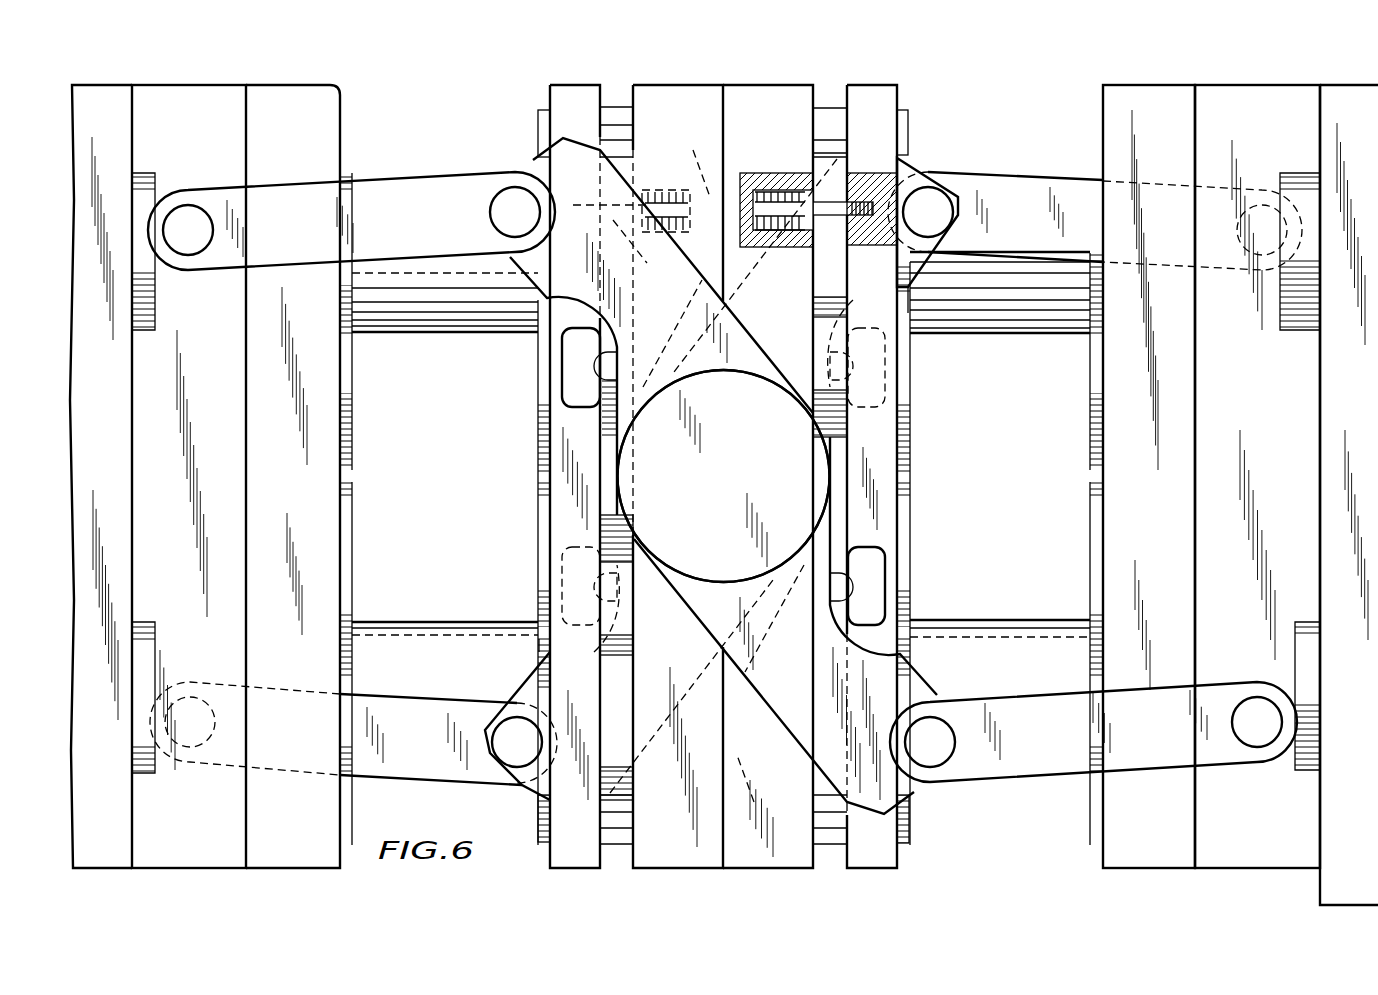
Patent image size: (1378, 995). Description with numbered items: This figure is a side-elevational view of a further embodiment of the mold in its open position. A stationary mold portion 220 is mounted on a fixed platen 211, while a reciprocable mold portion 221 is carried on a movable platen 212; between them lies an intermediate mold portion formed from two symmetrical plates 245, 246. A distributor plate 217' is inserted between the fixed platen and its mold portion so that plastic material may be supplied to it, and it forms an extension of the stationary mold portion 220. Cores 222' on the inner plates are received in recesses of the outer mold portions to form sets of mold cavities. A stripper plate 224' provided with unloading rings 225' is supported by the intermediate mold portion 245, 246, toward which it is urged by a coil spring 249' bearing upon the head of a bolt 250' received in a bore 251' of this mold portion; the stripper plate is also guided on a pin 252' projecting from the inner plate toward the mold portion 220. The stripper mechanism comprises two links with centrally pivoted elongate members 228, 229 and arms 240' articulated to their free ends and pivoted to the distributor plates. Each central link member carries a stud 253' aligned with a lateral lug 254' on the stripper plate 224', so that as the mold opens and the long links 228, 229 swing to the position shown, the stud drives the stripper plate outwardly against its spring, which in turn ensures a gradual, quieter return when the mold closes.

The movable platen 212 is at (108, 96).
The reciprocable mold portion 221 is at (290, 96).
The symmetrical plate of intermediate mold portion 246 is at (668, 92).
The symmetrical plate of intermediate mold portion 245 is at (768, 92).
The stripper plate 224' is at (876, 459).
The pin 252' is at (893, 459).
The stationary mold portion 220 is at (1162, 96).
The distributor plate 217' is at (1257, 462).
The fixed platen 211 is at (1348, 100).
The bore 251' is at (800, 167).
The coil spring 249' is at (818, 195).
The centrally pivoted elongate member 229 is at (920, 180).
The arm 240' is at (1096, 481).
The bolt 250' is at (770, 525).
The stud 253' is at (804, 465).
The lateral lug 254' is at (916, 476).
The unloading ring 225' is at (1000, 548).
The core 222' is at (777, 476).
The centrally pivoted elongate member 228 is at (782, 708).